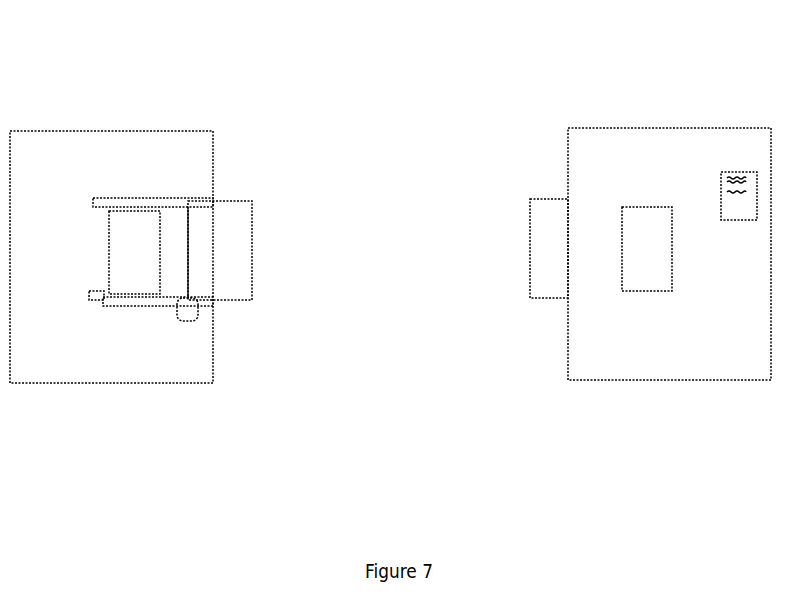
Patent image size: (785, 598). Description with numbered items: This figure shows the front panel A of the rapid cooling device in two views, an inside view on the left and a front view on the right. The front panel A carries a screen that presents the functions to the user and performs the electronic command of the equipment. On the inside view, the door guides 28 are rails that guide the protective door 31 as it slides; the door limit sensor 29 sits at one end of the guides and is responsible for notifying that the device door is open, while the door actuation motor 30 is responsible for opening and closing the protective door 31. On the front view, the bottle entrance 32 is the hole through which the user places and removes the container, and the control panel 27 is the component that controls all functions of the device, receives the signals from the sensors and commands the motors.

The front panel A is at (672, 112).
The control panel 27 is at (738, 213).
The door guides 28 is at (153, 199).
The door limit sensor 29 is at (97, 300).
The door actuation motor 30 is at (190, 313).
The protective door 31 is at (233, 270).
The bottle entrance 32 is at (622, 292).